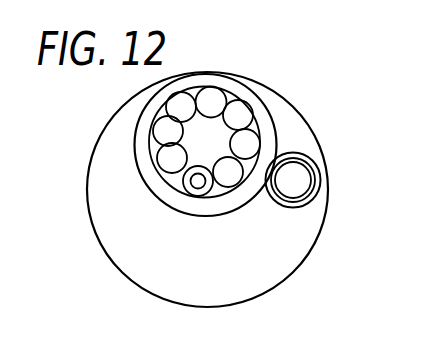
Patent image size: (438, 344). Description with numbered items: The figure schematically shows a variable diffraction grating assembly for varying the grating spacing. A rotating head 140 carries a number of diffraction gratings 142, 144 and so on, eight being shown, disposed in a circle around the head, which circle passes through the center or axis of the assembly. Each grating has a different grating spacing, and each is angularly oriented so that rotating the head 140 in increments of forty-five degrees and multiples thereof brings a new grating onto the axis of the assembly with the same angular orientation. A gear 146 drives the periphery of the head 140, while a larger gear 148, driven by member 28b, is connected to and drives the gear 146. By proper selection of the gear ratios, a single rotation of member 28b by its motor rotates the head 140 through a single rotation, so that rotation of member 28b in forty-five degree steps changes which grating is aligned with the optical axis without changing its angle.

The member 28b is at (318, 233).
The rotating head 140 is at (218, 73).
The diffraction grating 142 is at (242, 112).
The diffraction grating 144 is at (250, 142).
The gear 146 is at (287, 193).
The larger gear 148 is at (308, 153).